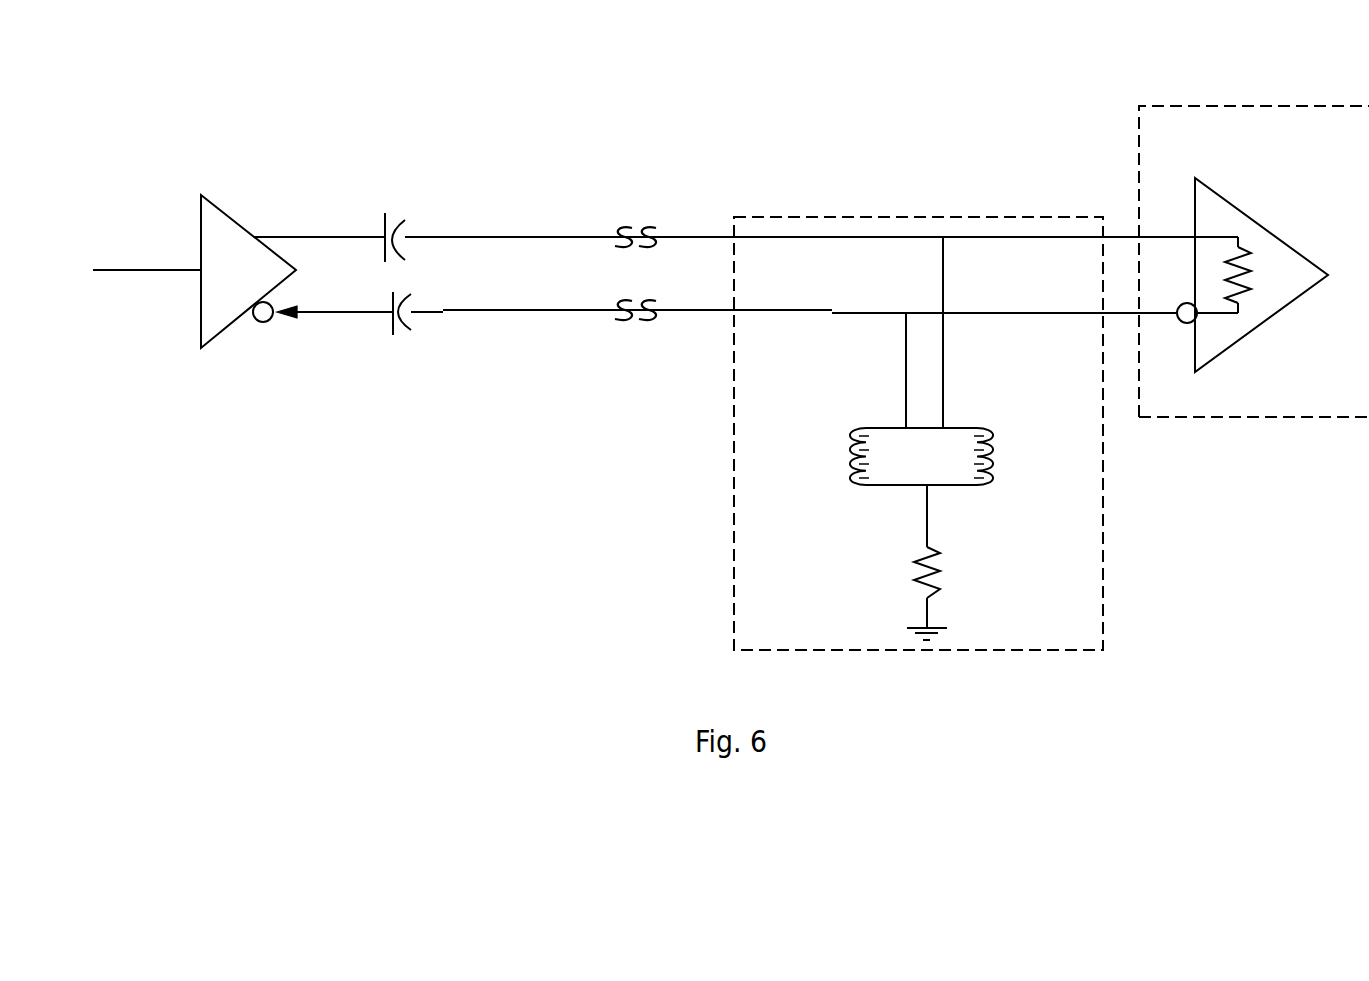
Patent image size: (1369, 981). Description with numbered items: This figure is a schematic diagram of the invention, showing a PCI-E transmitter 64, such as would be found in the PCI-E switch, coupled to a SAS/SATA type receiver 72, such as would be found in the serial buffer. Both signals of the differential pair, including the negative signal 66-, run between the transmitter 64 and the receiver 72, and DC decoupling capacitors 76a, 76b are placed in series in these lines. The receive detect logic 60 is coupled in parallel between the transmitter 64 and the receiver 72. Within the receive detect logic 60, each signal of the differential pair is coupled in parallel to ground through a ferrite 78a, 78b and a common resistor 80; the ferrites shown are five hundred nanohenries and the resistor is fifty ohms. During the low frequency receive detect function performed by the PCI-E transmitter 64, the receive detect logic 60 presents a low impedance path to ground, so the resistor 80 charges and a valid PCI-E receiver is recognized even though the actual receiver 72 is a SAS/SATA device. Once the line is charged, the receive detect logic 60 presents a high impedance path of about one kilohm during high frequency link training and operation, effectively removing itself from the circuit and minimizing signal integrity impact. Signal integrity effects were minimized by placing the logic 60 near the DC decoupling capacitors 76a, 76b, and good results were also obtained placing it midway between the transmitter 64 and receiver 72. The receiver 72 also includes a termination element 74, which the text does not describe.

The receive detect logic 60 is at (825, 217).
The PCI-E transmitter 64 is at (207, 195).
The signal 66- is at (340, 312).
The SAS/SATA receiver 72 is at (1282, 106).
The termination resistor 74 is at (1248, 303).
The DC decoupling capacitor 76a is at (405, 225).
The DC decoupling capacitor 76b is at (420, 328).
The ferrite 78a is at (983, 428).
The ferrite 78b is at (868, 428).
The resistor 80 is at (922, 563).